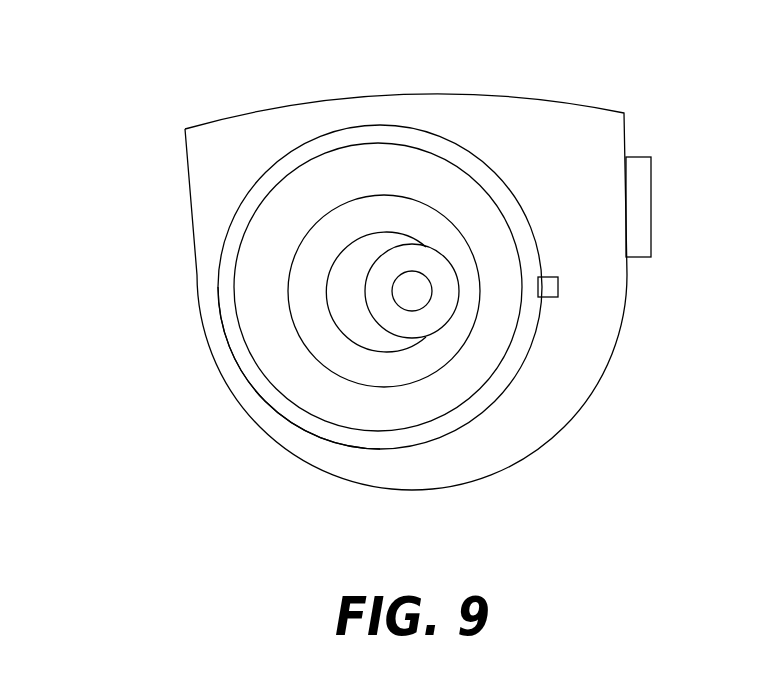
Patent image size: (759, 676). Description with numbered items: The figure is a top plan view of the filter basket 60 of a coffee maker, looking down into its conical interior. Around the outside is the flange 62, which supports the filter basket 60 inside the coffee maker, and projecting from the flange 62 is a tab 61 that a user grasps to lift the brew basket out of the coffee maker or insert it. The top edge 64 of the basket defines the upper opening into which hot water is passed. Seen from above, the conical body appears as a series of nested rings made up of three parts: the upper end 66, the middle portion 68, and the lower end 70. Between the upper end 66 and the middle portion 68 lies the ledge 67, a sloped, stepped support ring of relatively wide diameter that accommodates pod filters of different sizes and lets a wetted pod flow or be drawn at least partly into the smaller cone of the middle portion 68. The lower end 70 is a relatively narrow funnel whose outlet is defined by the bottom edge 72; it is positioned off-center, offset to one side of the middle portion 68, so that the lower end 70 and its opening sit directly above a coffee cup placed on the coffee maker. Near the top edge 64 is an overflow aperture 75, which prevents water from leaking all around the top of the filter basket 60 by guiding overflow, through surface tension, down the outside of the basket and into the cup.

The filter basket 60 is at (590, 424).
The tab 61 is at (640, 205).
The flange 62 is at (594, 148).
The top edge 64 is at (227, 343).
The upper end 66 is at (227, 248).
The ledge 67 is at (277, 203).
The middle portion 68 is at (328, 220).
The lower end 70 is at (398, 242).
The bottom edge 72 is at (404, 272).
The overflow aperture 75 is at (558, 287).